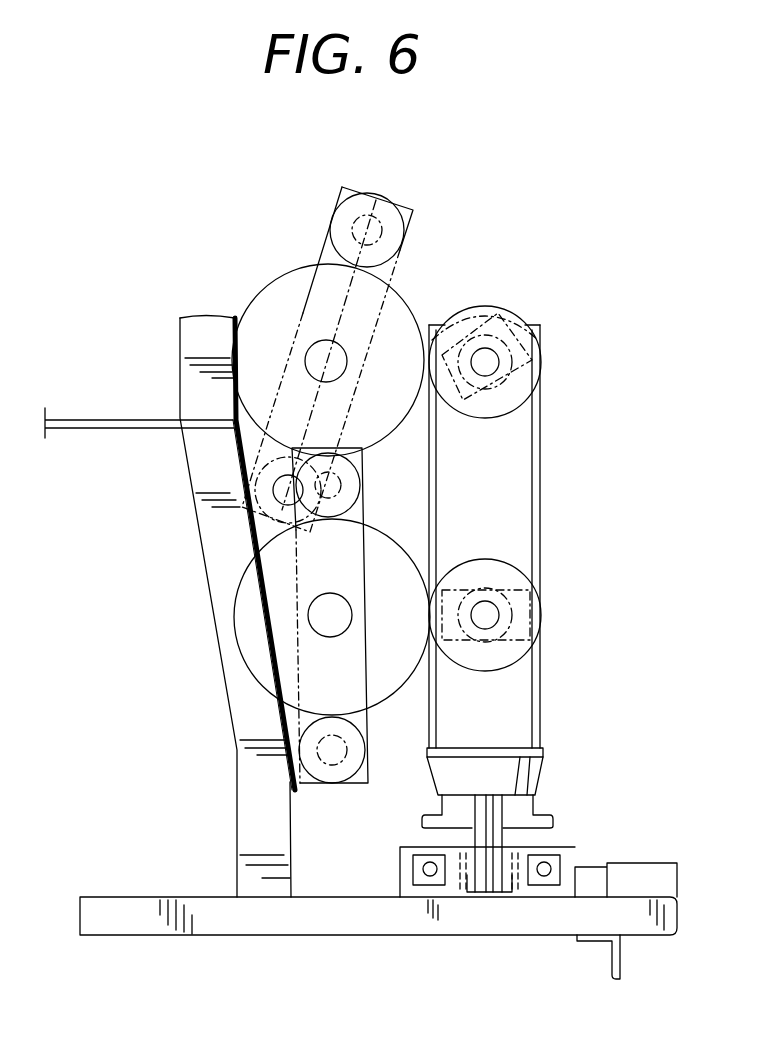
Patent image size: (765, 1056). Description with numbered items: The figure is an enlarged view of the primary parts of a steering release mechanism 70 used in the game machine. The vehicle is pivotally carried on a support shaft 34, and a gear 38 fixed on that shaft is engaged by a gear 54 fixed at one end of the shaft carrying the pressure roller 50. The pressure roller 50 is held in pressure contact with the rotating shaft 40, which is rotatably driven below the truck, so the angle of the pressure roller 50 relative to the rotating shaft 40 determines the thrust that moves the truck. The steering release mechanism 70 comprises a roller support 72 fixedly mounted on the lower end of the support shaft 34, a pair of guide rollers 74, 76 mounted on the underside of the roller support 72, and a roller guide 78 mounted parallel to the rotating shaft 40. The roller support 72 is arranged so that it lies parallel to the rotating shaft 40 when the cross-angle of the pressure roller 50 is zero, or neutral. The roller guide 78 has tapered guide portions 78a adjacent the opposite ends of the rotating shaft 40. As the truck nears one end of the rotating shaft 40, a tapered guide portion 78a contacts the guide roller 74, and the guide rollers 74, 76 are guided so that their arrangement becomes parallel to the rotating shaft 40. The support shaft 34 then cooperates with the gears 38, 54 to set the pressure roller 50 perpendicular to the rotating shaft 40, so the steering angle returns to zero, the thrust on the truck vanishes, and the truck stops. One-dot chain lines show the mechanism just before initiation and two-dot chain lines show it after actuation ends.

The support shaft 34 is at (306, 363).
The gear 38 is at (267, 302).
The rotating shaft 40 is at (517, 467).
The pressure roller 50 is at (496, 340).
The gear 54 is at (526, 404).
The steering release mechanism 70 is at (168, 647).
The roller support 72 is at (324, 356).
The guide roller 74 is at (258, 478).
The guide roller 76 is at (404, 212).
The roller guide 78 is at (245, 543).
The tapered guide portion 78a is at (256, 563).